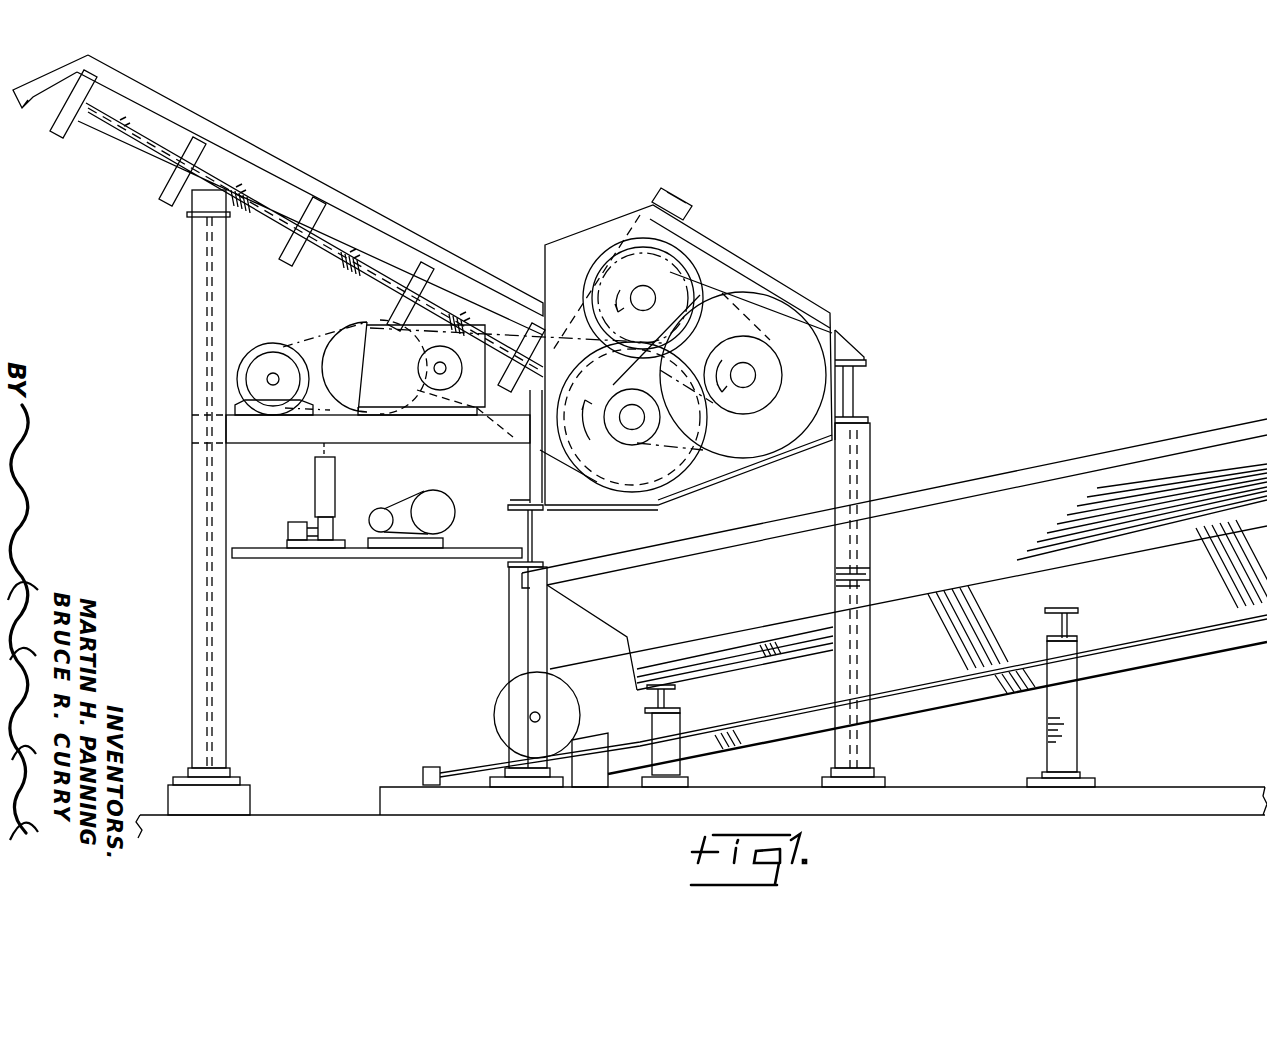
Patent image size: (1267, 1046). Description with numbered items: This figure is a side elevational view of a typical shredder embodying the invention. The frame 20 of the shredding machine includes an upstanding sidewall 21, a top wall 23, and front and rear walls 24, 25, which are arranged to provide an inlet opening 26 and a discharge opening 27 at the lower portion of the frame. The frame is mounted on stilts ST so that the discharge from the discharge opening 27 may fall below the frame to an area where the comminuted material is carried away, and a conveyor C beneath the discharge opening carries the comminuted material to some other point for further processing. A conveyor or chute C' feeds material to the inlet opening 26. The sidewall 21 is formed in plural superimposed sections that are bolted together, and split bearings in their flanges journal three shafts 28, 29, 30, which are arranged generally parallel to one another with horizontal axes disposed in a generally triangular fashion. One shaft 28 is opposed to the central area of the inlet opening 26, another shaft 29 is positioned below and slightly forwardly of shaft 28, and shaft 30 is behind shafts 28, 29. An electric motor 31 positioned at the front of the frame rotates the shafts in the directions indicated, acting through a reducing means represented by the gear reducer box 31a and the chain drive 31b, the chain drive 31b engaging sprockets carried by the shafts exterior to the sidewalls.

The frame 20 is at (816, 278).
The sidewall 21 is at (583, 504).
The top wall 23 is at (737, 247).
The front wall 24 is at (542, 468).
The rear wall 25 is at (840, 398).
The inlet opening 26 is at (640, 223).
The discharge opening 27 is at (748, 468).
The shaft 28 is at (648, 292).
The shaft 29 is at (630, 422).
The shaft 30 is at (745, 380).
The electric motor 31 is at (278, 346).
The gear reducer box 31a is at (368, 328).
The chain drive 31b is at (498, 427).
The conveyor C is at (845, 603).
The conveyor or chute C' is at (279, 223).
The stilts ST is at (875, 470).